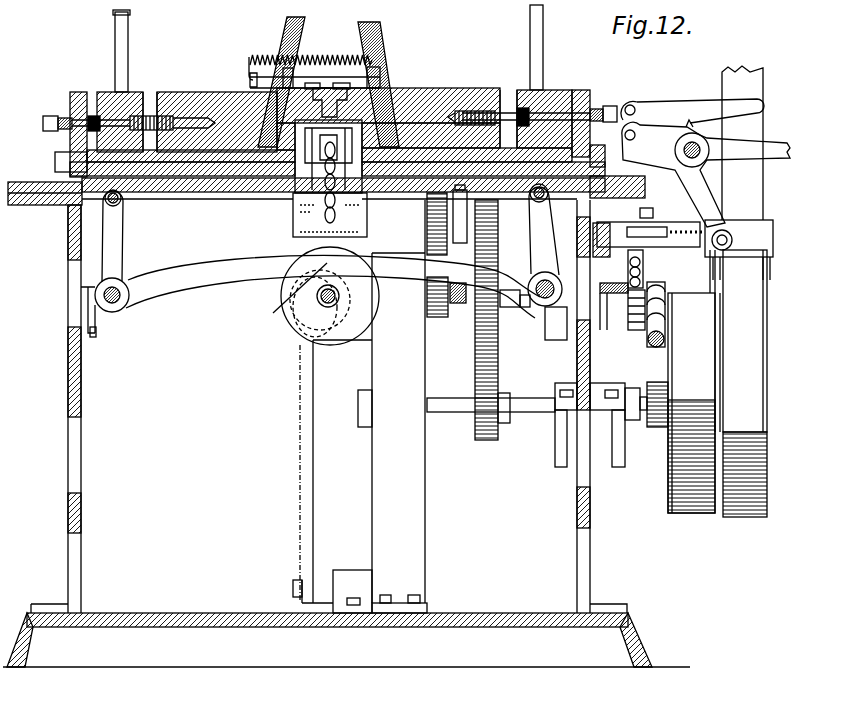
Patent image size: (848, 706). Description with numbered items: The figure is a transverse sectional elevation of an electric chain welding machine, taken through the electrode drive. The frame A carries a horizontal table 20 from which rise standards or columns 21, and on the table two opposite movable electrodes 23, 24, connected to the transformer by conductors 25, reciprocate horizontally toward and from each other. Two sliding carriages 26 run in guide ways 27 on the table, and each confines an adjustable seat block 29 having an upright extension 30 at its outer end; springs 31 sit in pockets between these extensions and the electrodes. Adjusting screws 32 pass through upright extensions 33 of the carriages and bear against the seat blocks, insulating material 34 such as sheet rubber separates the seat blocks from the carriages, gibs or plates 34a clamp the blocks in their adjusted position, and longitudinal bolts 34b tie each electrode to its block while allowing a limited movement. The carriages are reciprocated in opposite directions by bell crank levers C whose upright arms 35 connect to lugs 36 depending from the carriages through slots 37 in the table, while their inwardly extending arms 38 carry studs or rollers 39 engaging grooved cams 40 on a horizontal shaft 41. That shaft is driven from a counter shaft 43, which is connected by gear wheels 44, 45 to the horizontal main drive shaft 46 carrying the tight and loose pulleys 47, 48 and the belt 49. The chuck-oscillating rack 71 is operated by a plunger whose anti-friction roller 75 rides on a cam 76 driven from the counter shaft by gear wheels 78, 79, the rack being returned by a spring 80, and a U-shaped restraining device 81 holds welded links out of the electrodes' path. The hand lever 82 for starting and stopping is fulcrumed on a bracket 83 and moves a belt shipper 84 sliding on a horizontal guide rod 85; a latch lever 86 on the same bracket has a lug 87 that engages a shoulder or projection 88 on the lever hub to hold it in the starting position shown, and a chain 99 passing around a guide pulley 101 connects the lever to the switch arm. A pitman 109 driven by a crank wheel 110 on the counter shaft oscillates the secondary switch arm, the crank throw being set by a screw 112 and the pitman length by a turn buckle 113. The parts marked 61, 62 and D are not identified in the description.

The horizontal table 20 is at (230, 193).
The standards or columns 21 is at (130, 17).
The movable electrode 23 is at (198, 84).
The movable electrode 24 is at (452, 100).
The conductors 25 is at (375, 22).
The sliding carriages 26 is at (210, 176).
The guide ways 27 is at (57, 167).
The adjustable seat blocks 29 is at (163, 160).
The upright extensions 30 is at (132, 92).
The springs 31 is at (160, 90).
The adjusting screws 32 is at (50, 115).
The upright extensions 33 is at (80, 92).
The insulating material 34 is at (93, 114).
The gibs or plates 34a is at (58, 125).
The longitudinal bolts 34b is at (205, 118).
The upright arms 35 is at (118, 248).
The lugs 36 is at (62, 206).
The slots 37 is at (190, 183).
The inwardly extending arms 38 is at (240, 272).
The studs or rollers 39 is at (287, 303).
The grooved cams 40 is at (292, 326).
The horizontal shaft 41 is at (331, 309).
The shaft 43 is at (465, 294).
The gear wheel 44 is at (490, 334).
The gear wheel 45 is at (480, 440).
The horizontal shaft 46 is at (447, 412).
The tight pulley 47 is at (770, 520).
The loose pulley 48 is at (668, 472).
The belt 49 is at (738, 341).
The column 61 is at (302, 488).
The base block 62 is at (349, 580).
The rack 71 is at (322, 76).
The anti-friction roller 75 is at (427, 206).
The cam 76 is at (453, 226).
The gear wheel 78 is at (440, 306).
The gear wheel 79 is at (427, 244).
The spring 80 is at (250, 55).
The restraining device 81 is at (293, 201).
The hand lever 82 is at (706, 187).
The bracket 83 is at (706, 174).
The belt shipper 84 is at (739, 250).
The horizontal guide rod 85 is at (702, 257).
The latch lever 86 is at (655, 112).
The lug 87 is at (687, 125).
The shoulder or projection 88 is at (687, 127).
The chain 99 is at (678, 244).
The guide pulley 101 is at (652, 228).
The pitman 109 is at (664, 341).
The crank wheel 110 is at (632, 320).
The screw 112 is at (629, 270).
The turn buckle 113 is at (665, 316).
The frame A is at (82, 461).
The bell crank levers C is at (170, 278).
The clamp D is at (340, 87).